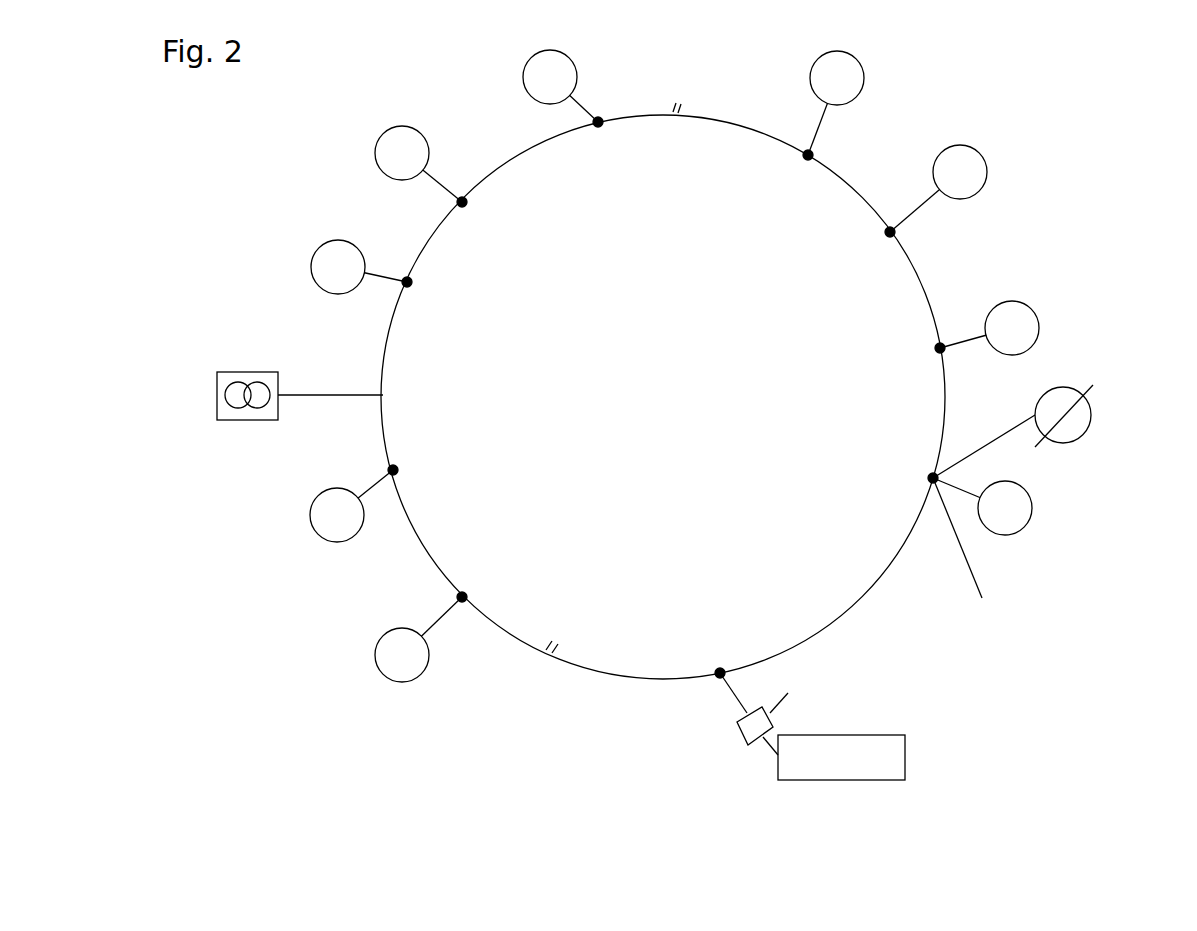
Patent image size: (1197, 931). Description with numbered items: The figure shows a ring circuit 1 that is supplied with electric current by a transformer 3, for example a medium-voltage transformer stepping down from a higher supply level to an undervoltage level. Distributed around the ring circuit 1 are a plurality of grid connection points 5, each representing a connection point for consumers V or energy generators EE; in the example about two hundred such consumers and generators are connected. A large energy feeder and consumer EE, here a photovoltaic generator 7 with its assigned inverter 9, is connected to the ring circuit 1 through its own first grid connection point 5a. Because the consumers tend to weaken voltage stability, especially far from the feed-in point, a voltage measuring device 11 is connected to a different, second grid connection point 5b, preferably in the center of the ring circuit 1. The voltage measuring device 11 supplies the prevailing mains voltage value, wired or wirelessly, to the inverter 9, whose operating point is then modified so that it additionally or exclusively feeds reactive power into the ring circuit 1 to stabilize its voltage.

The ring circuit 1 is at (598, 673).
The transformer 3 is at (217, 420).
The grid connection points 5 is at (598, 122).
The grid connection point 5a is at (720, 673).
The second grid connection point 5b is at (933, 478).
The photovoltaic generator 7 is at (905, 757).
The inverter 9 is at (743, 743).
The voltage measuring device 11 is at (1067, 383).